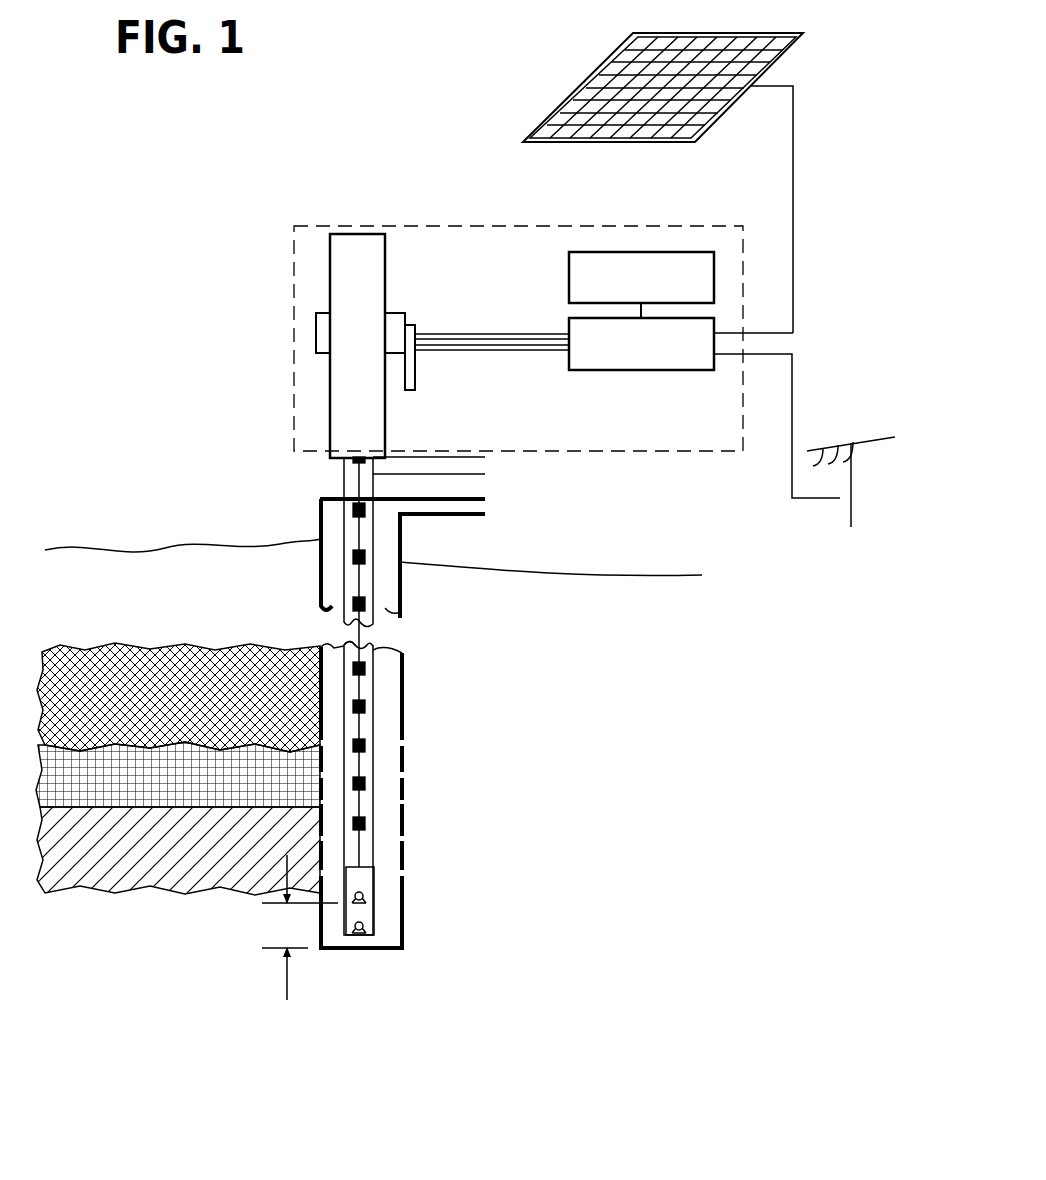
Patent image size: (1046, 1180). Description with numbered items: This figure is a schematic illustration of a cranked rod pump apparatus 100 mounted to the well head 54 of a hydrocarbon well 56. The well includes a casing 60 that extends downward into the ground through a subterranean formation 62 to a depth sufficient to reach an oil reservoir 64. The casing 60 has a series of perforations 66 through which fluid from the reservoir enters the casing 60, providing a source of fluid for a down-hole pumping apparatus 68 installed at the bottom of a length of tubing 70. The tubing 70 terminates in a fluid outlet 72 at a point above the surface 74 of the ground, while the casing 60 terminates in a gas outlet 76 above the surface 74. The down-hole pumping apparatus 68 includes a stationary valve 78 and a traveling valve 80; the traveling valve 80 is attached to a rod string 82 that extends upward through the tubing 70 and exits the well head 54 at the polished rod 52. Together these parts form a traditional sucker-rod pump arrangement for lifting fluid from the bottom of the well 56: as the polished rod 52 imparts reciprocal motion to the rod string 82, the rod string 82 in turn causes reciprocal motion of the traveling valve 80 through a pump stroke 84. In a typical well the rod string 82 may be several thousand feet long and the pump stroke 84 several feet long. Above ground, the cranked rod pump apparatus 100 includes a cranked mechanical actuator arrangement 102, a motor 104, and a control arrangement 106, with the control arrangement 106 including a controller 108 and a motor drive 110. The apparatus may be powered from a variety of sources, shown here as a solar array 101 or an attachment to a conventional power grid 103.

The polished rod 52 is at (355, 475).
The well head 54 is at (283, 510).
The well 56 is at (443, 710).
The casing 60 is at (403, 595).
The subterranean formation 62 is at (83, 658).
The oil reservoir 64 is at (110, 892).
The perforations 66 is at (405, 743).
The down-hole pumping apparatus 68 is at (368, 867).
The tubing 70 is at (373, 645).
The fluid outlet 72 is at (485, 465).
The surface 74 is at (673, 573).
The gas outlet 76 is at (477, 508).
The stationary valve 78 is at (367, 923).
The traveling valve 80 is at (372, 890).
The rod string 82 is at (360, 810).
The pump stroke 84 is at (287, 987).
The cranked rod pump apparatus 100 is at (451, 223).
The solar array 101 is at (600, 57).
The cranked mechanical actuator arrangement 102 is at (330, 393).
The power grid 103 is at (851, 517).
The motor 104 is at (415, 383).
The control arrangement 106 is at (543, 295).
The controller 108 is at (641, 285).
The motor drive 110 is at (704, 408).